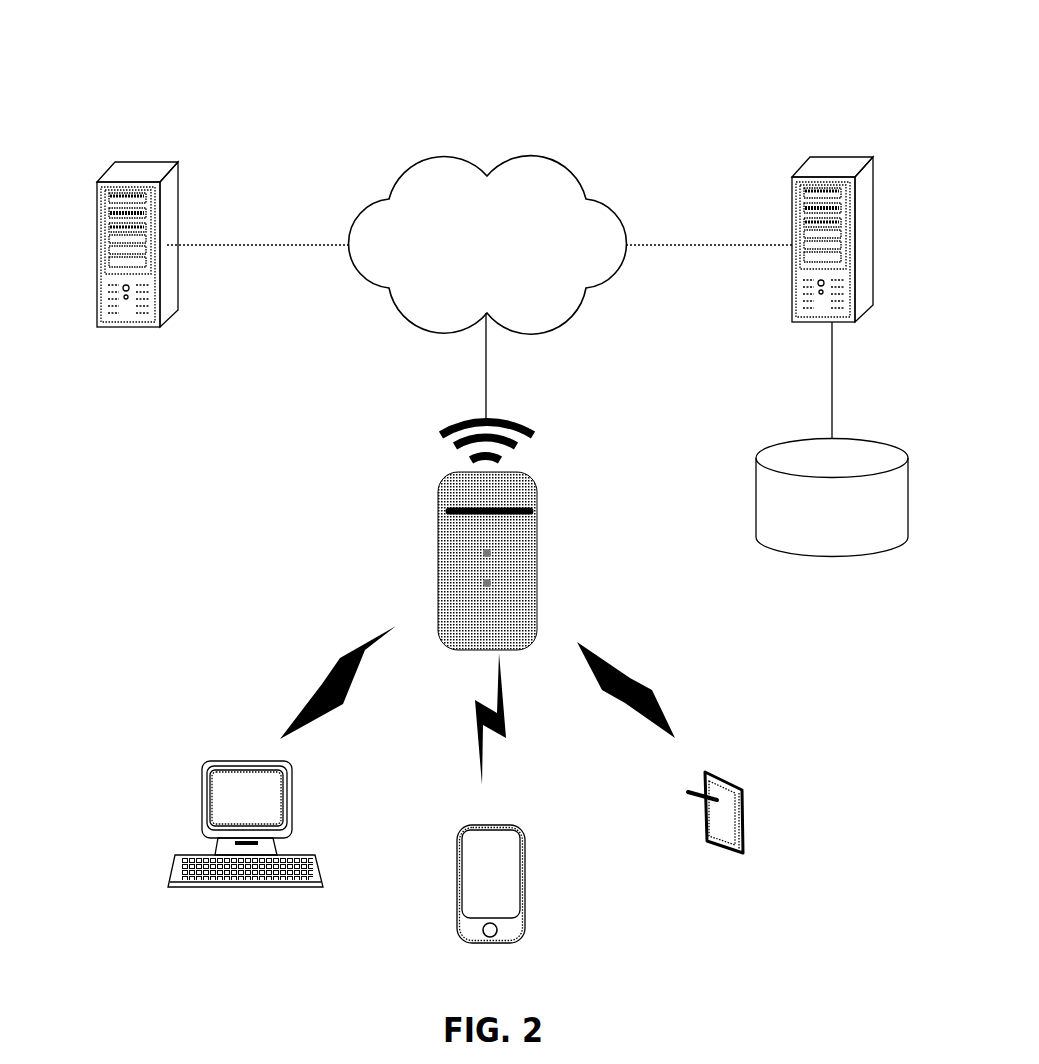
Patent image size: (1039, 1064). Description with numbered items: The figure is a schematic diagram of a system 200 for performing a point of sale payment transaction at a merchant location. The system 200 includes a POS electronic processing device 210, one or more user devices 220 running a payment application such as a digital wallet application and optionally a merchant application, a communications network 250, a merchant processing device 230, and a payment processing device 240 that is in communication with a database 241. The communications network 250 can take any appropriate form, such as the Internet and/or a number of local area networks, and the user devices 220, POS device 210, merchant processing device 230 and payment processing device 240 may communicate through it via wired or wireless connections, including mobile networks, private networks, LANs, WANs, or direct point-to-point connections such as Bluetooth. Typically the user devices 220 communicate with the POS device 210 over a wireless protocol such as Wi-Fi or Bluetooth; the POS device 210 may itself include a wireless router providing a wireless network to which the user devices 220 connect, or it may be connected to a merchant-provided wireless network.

The system 200 is at (257, 75).
The POS electronic processing device 210 is at (456, 536).
The user devices 220 is at (463, 852).
The merchant processing device 230 is at (102, 244).
The payment processing device 240 is at (863, 239).
The database 241 is at (832, 498).
The communications network 250 is at (488, 245).